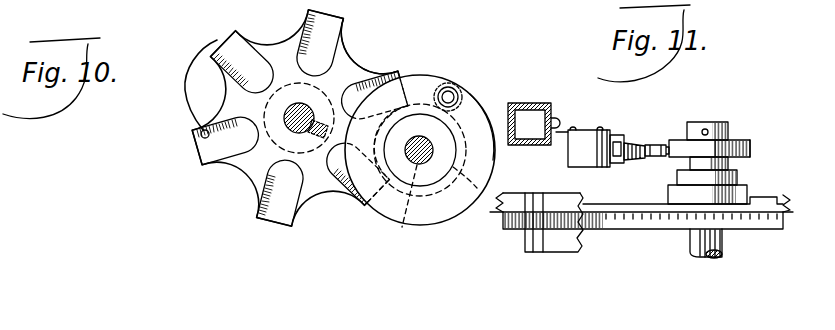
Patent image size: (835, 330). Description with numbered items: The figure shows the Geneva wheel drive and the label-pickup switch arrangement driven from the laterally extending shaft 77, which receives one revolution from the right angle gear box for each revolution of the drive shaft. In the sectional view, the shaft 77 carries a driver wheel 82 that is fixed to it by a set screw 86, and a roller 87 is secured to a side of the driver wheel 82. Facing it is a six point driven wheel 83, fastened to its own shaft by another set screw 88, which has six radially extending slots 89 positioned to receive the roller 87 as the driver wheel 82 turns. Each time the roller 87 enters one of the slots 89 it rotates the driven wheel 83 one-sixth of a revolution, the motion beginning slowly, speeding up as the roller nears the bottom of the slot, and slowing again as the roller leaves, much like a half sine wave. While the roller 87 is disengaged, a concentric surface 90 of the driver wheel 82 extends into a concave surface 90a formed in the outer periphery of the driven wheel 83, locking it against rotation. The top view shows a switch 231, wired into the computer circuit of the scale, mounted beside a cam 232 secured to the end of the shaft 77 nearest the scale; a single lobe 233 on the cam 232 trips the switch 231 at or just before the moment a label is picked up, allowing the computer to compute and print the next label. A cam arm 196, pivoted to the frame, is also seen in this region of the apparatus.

In FIG. 10, the laterally extending shaft 77 is at (427, 160).
In FIG. 11, the laterally extending shaft 77 is at (693, 240).
In FIG. 10, the driver wheel 82 is at (478, 102).
In FIG. 10, the six point driven wheel 83 is at (218, 165).
In FIG. 10, the set screw 86 is at (403, 222).
In FIG. 10, the roller 87 is at (458, 90).
In FIG. 10, the set screw 88 is at (322, 145).
In FIG. 10, the radially extending slots 89 is at (188, 89).
In FIG. 10, the concentric surface 90 is at (467, 153).
In FIG. 10, the concave surface 90a is at (347, 43).
In FIG. 11, the cam arm 196 is at (573, 243).
In FIG. 11, the switch 231 is at (587, 138).
In FIG. 11, the cam 232 is at (735, 137).
In FIG. 11, the single lobe 233 is at (750, 147).